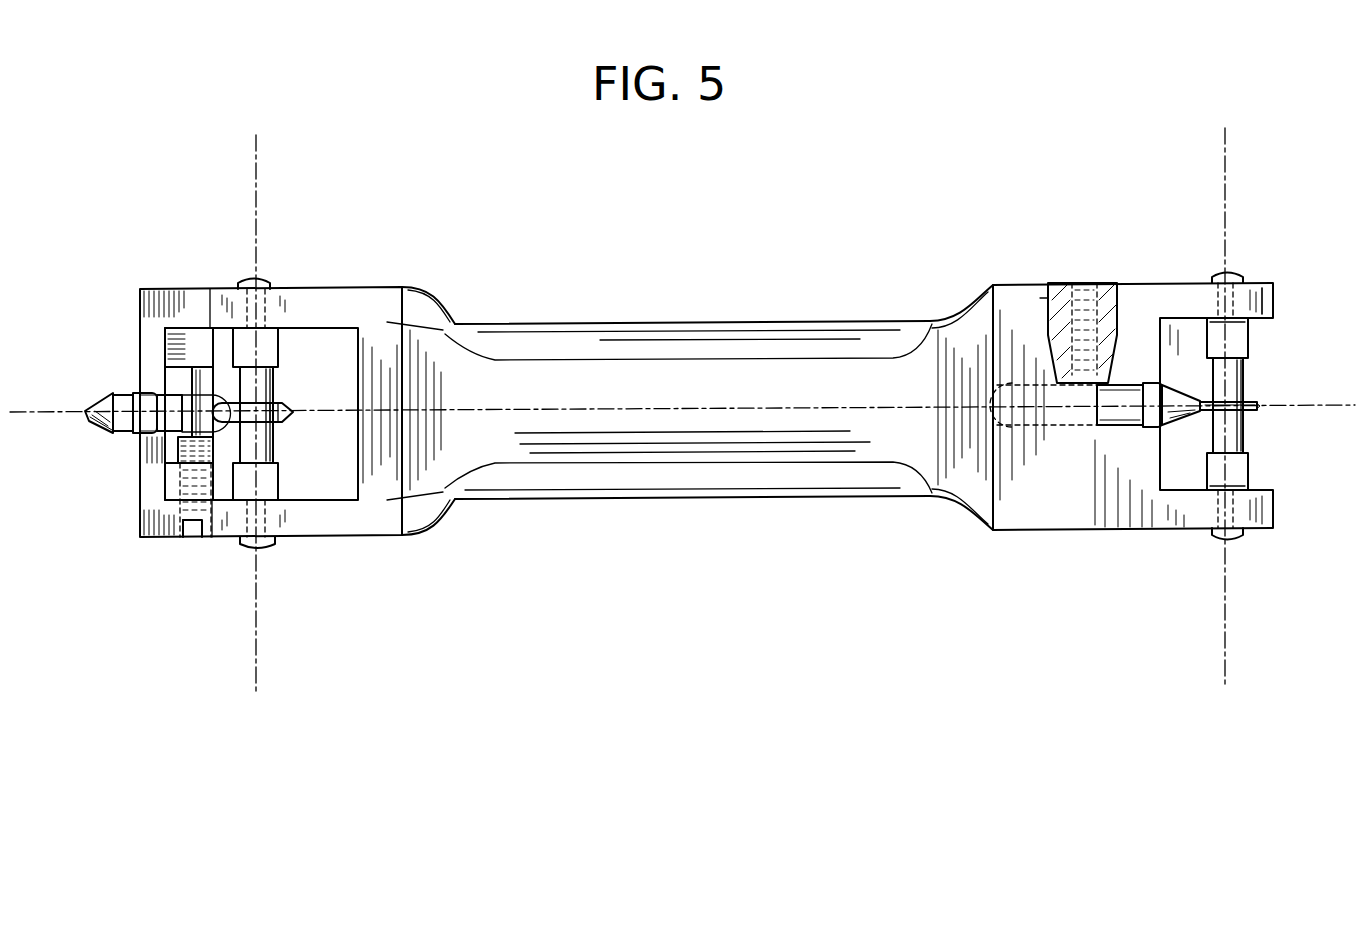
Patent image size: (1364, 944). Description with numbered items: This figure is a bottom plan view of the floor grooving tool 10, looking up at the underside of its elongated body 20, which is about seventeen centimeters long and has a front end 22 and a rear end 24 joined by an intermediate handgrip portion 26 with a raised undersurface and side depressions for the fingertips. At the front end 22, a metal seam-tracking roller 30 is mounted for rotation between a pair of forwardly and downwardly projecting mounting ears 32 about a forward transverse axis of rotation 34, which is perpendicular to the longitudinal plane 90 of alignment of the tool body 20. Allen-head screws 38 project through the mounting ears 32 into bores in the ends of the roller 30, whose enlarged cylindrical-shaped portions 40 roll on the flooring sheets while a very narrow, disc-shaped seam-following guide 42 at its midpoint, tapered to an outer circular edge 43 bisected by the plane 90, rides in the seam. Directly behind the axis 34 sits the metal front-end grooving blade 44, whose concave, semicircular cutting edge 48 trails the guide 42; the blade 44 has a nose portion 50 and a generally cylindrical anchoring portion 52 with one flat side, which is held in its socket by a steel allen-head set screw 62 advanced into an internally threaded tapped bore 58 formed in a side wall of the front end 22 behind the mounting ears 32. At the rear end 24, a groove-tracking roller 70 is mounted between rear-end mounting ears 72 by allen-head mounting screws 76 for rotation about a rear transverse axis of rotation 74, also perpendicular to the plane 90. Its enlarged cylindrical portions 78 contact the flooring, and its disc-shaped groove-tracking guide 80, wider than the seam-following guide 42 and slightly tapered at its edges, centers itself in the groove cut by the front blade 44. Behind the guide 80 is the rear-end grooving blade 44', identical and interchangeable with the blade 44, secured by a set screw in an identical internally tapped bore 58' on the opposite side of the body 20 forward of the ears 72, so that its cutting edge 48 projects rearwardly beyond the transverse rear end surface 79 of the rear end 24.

The floor grooving tool 10 is at (790, 228).
The body 20 is at (638, 306).
The front end 22 is at (1113, 513).
The rear end 24 is at (352, 287).
The handgrip portion 26 is at (701, 472).
The seam-tracking roller 30 is at (1280, 465).
The mounting ears 32 is at (1276, 297).
The forward transverse axis of rotation 34 is at (1225, 178).
The allen-head screws 38 is at (1213, 275).
The enlarged cylindrical-shaped portions 40 is at (1250, 343).
The seam-following guide 42 is at (1247, 423).
The outer circular edge 43 is at (1263, 405).
The front-end grooving blade 44 is at (1083, 498).
The rear-end grooving blade 44' is at (103, 452).
The cutting edge 48 is at (83, 418).
The nose portion 50 is at (97, 400).
The anchoring portion 52 is at (1127, 392).
The internally threaded tapped bore 58 is at (1019, 266).
The internally tapped bore 58' is at (193, 565).
The set screw 62 is at (175, 478).
The groove-tracking roller 70 is at (292, 350).
The rear-end mounting ears 72 is at (287, 288).
The rear transverse axis of rotation 74 is at (260, 645).
The allen-head mounting screws 76 is at (240, 280).
The enlarged cylindrical portions 78 is at (240, 347).
The rear end surface 79 is at (140, 313).
The groove-tracking guide 80 is at (300, 417).
The plane 90 is at (33, 414).